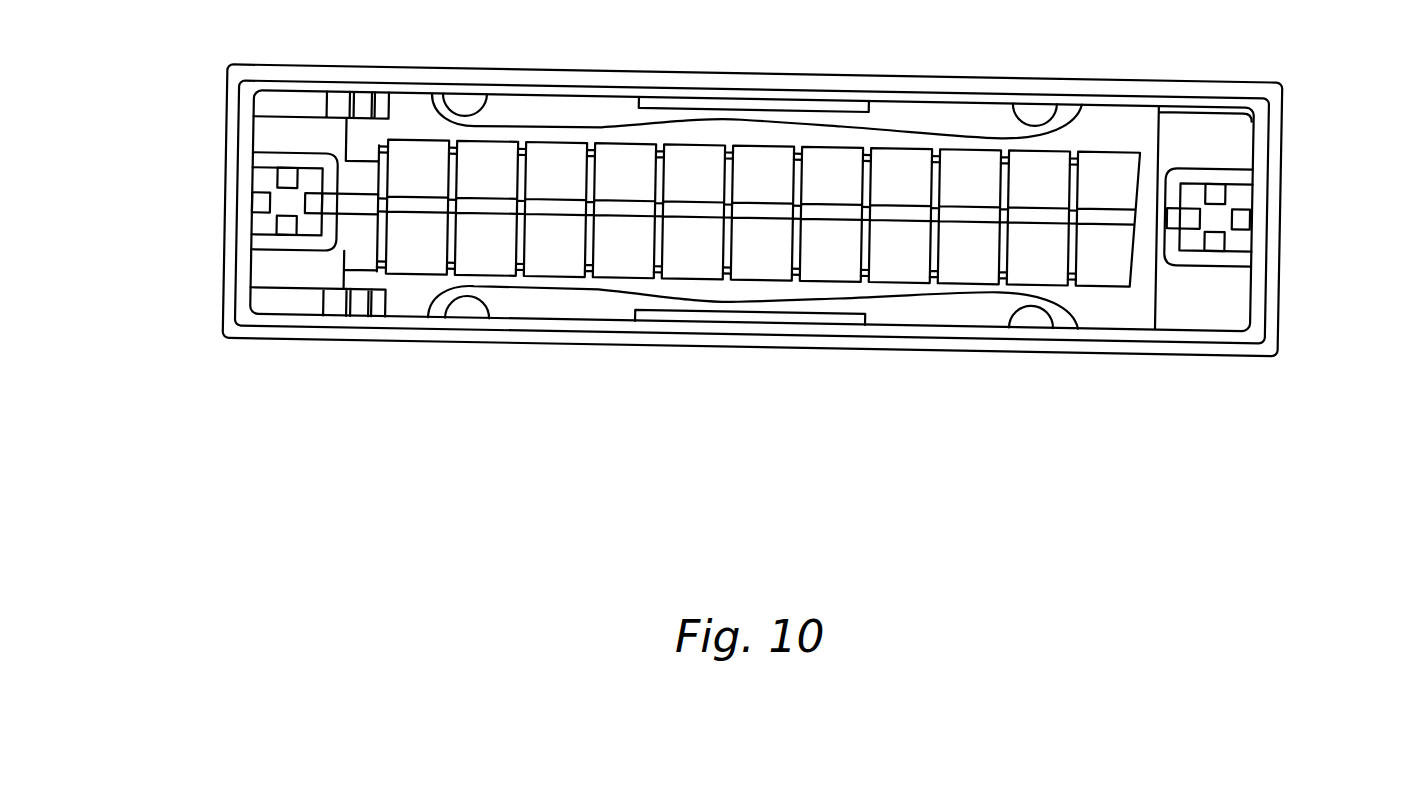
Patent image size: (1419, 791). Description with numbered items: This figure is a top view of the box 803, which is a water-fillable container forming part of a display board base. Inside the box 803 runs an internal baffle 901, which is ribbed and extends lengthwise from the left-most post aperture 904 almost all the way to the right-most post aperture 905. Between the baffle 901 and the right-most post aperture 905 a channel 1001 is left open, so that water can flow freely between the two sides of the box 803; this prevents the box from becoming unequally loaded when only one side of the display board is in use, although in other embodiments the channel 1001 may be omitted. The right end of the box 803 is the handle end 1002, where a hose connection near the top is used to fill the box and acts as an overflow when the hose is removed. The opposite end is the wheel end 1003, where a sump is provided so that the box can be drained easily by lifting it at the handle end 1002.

The box 803 is at (764, 73).
The internal baffle 901 is at (838, 143).
The left-most post aperture 904 is at (273, 228).
The right-most post aperture 905 is at (1240, 243).
The channel 1001 is at (1142, 240).
The handle end 1002 is at (1306, 304).
The wheel end 1003 is at (196, 111).